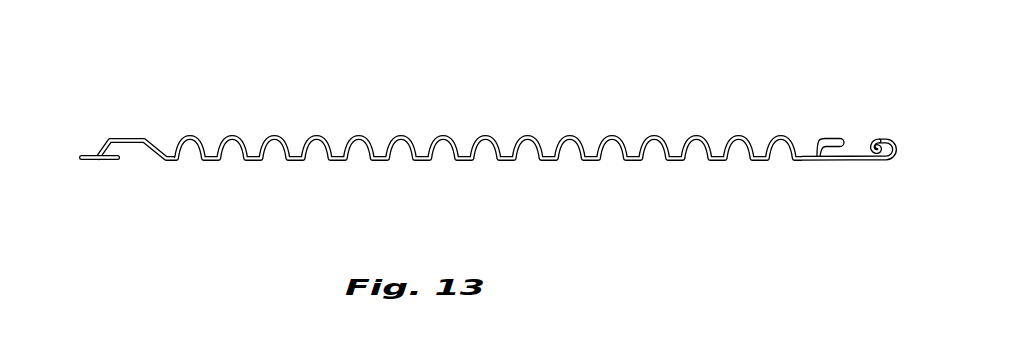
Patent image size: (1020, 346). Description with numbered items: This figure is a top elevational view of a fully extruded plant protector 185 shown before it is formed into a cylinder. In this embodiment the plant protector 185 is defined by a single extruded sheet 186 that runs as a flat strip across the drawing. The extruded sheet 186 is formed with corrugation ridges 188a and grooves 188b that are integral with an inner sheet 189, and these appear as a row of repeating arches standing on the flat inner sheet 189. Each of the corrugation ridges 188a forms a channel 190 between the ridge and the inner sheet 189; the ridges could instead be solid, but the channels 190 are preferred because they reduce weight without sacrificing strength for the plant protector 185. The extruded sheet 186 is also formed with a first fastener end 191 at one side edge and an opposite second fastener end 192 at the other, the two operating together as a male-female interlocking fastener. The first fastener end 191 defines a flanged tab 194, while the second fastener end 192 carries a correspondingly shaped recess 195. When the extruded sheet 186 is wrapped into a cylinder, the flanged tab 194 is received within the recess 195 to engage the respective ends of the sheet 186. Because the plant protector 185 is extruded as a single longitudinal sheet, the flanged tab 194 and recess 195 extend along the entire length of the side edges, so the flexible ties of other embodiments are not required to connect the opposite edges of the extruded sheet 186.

The plant protector 185 is at (482, 140).
The extruded sheet 186 is at (782, 161).
The corrugation ridges 188a is at (780, 136).
The grooves 188b is at (758, 136).
The inner sheet 189 is at (662, 161).
The channel 190 is at (608, 142).
The first fastener end 191 is at (105, 136).
The second fastener end 192 is at (890, 137).
The flanged tab 194 is at (87, 163).
The recess 195 is at (866, 148).